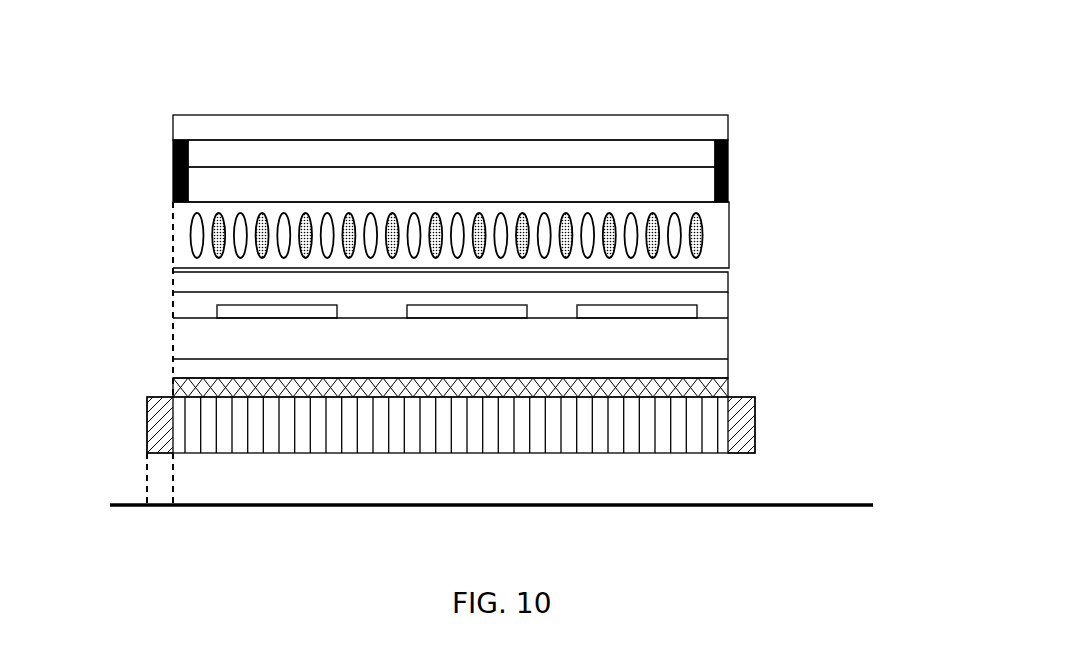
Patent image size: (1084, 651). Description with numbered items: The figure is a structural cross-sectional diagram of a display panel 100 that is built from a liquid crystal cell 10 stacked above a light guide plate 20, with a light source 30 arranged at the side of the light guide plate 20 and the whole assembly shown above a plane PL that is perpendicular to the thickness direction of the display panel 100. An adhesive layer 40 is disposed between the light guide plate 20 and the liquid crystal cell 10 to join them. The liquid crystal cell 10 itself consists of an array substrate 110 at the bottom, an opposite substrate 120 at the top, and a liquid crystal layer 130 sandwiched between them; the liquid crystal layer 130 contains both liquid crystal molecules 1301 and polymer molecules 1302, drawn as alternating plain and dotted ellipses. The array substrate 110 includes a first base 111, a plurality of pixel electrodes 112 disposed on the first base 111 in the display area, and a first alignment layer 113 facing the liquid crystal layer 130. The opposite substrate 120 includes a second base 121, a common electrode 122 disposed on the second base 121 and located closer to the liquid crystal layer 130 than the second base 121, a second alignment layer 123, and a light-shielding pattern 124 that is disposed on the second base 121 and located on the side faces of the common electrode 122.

The display panel 100 is at (150, 60).
The liquid crystal cell 10 is at (165, 115).
The opposite substrate 120 is at (827, 83).
The second base 121 is at (705, 123).
The common electrode 122 is at (690, 158).
The second alignment layer 123 is at (693, 188).
The light-shielding pattern 124 is at (730, 150).
The liquid crystal layer 130 is at (731, 203).
The liquid crystal molecules 1301 is at (242, 223).
The polymer molecules 1302 is at (262, 225).
The array substrate 110 is at (862, 275).
The first base 111 is at (717, 370).
The pixel electrodes 112 is at (683, 312).
The first alignment layer 113 is at (683, 283).
The adhesive layer 40 is at (720, 386).
The light source 30 is at (747, 417).
The light guide plate 20 is at (688, 442).
The plane PL is at (808, 503).